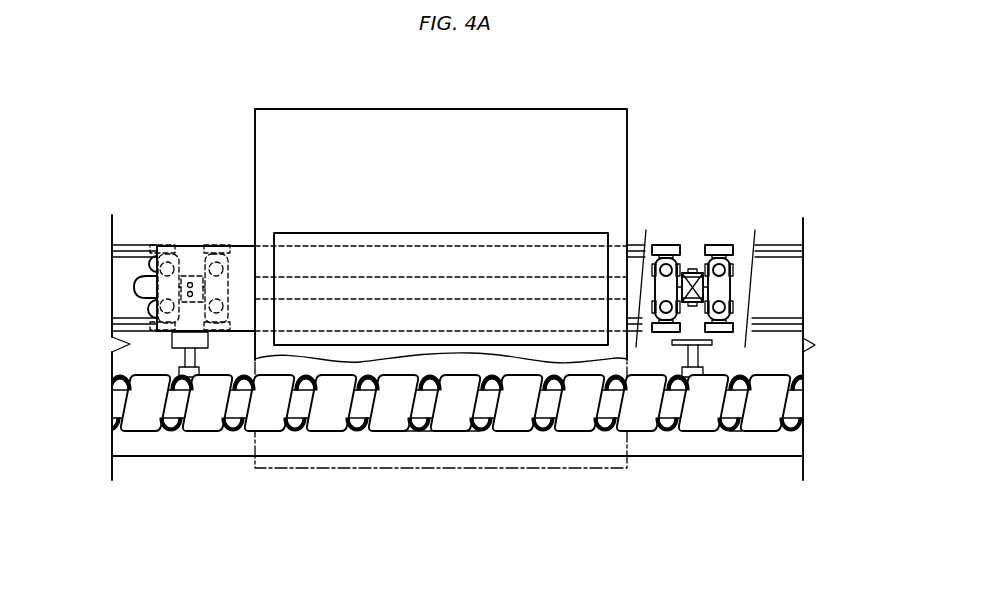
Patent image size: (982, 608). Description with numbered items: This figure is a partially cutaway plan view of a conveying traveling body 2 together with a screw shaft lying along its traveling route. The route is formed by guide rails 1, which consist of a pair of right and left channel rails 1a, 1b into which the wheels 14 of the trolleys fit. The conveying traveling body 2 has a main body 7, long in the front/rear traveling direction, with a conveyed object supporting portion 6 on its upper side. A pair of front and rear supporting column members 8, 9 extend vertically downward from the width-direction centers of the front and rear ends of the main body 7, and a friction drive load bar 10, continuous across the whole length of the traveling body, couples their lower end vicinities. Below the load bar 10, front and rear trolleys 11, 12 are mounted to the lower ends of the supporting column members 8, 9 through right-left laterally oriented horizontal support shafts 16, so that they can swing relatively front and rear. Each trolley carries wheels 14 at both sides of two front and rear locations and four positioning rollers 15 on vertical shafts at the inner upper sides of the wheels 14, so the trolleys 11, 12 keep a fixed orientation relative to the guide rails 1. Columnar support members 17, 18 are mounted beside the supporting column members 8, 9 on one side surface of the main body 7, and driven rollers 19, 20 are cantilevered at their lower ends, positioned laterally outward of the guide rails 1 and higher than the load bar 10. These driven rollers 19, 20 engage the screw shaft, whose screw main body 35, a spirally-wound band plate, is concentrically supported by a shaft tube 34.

The guide rails 1 is at (133, 233).
The channel rail 1a is at (777, 242).
The channel rail 1b is at (793, 332).
The conveying traveling body 2 is at (251, 171).
The conveyed object supporting portion 6 is at (502, 258).
The main body 7 is at (357, 256).
The supporting column member 8 is at (190, 254).
The supporting column member 9 is at (731, 290).
The friction drive load bar 10 is at (417, 286).
The trolley 11 is at (143, 285).
The trolley 12 is at (648, 288).
The wheels 14 is at (155, 248).
The positioning rollers 15 is at (157, 267).
The horizontal support shaft 16 is at (692, 270).
The columnar support member 17 is at (170, 349).
The columnar support member 18 is at (688, 346).
The driven roller 19 is at (190, 374).
The driven roller 20 is at (688, 374).
The shaft tube 34 is at (740, 402).
The screw main body 35 is at (320, 428).